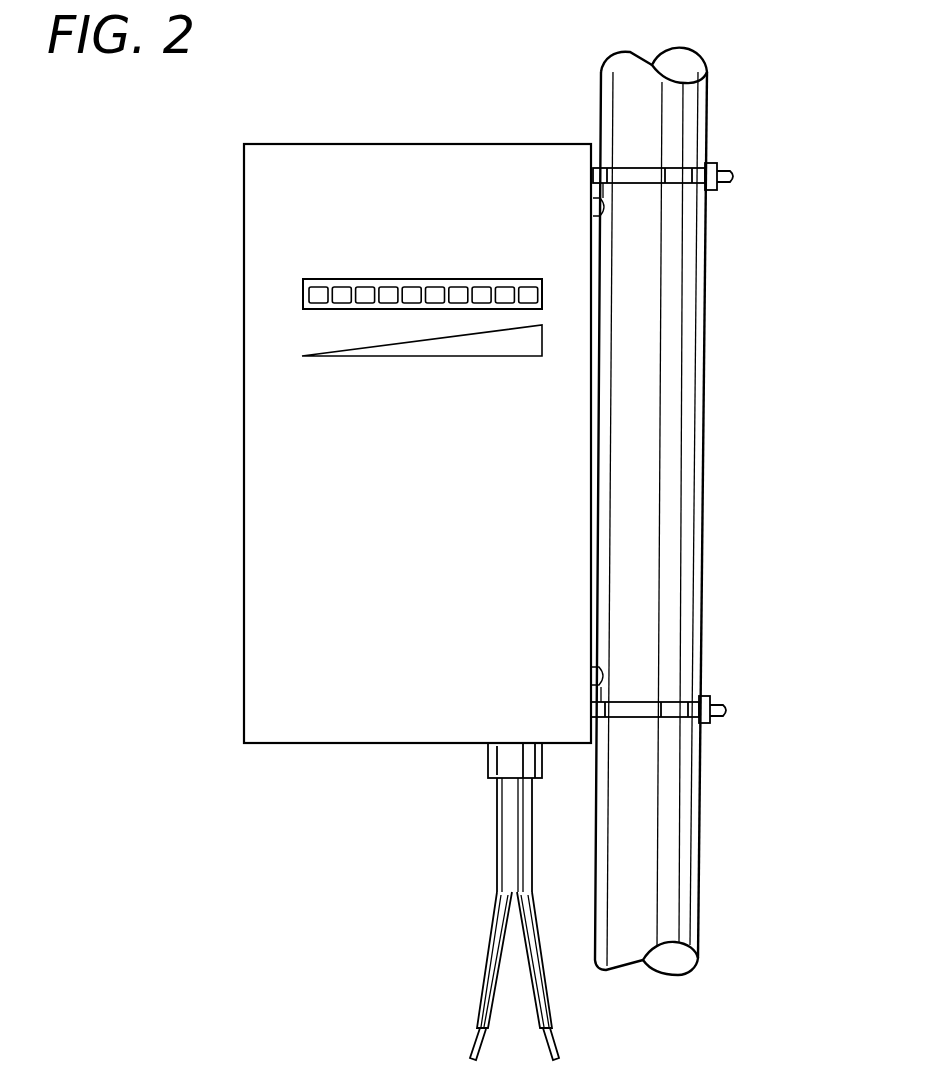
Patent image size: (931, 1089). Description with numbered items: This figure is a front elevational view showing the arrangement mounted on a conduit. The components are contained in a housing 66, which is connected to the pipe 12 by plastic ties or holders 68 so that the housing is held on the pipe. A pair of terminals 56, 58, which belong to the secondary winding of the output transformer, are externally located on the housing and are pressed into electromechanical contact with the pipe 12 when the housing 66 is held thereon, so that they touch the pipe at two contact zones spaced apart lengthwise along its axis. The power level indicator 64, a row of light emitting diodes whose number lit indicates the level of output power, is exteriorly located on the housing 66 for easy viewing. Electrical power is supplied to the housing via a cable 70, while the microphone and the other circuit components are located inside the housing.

The pipe 12 is at (683, 491).
The terminal 56 is at (606, 207).
The terminal 58 is at (604, 674).
The power level indicator 64 is at (323, 290).
The housing 66 is at (288, 743).
The plastic ties or holders 68 is at (737, 180).
The cable 70 is at (502, 875).